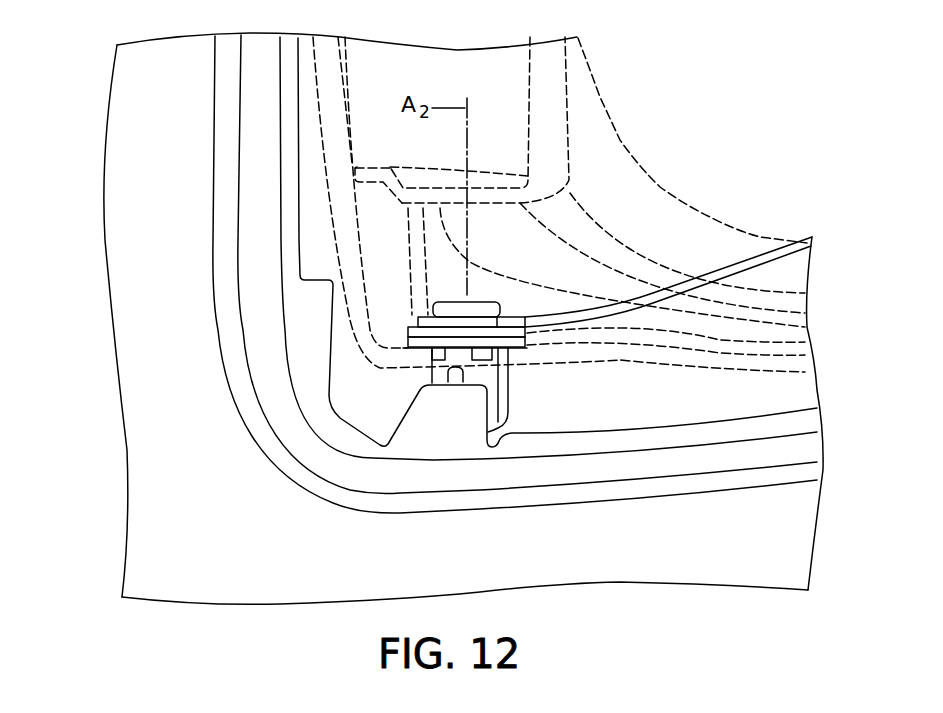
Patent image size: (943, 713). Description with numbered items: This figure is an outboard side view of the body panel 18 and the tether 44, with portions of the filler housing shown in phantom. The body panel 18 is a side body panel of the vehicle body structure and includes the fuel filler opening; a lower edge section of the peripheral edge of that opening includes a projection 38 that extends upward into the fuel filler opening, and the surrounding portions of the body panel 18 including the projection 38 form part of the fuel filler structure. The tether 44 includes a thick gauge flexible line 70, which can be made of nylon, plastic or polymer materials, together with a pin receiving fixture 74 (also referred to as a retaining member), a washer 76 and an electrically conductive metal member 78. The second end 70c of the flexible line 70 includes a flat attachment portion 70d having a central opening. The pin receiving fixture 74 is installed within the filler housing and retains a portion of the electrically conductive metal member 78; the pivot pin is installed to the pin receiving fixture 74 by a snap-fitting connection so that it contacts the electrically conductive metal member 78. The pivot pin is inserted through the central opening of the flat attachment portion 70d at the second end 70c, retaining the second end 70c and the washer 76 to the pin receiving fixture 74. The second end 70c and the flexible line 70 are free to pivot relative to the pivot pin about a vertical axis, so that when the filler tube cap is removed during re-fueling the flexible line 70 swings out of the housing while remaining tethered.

The body panel 18 is at (160, 260).
The projection 38 is at (443, 420).
The tether 44 is at (728, 264).
The thick gauge flexible line 70 is at (680, 293).
The second end 70c is at (507, 326).
The flat attachment portion 70d is at (425, 323).
The pin receiving fixture 74 is at (513, 338).
The washer 76 is at (527, 329).
The electrically conductive metal member 78 is at (450, 374).